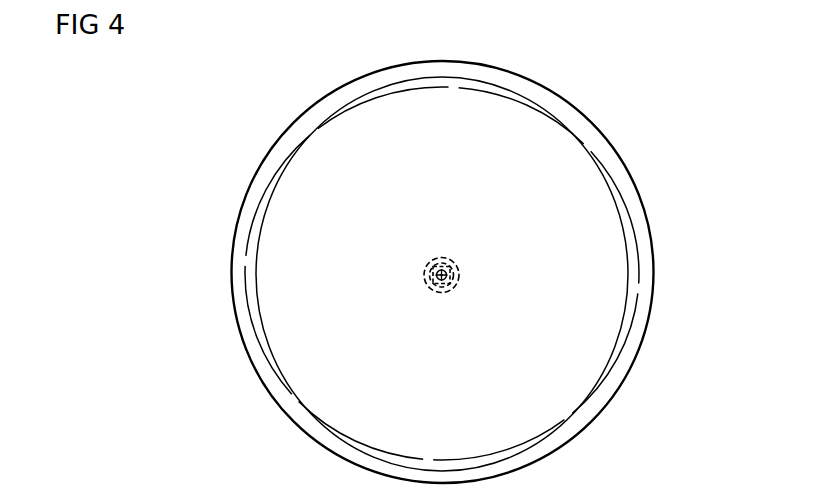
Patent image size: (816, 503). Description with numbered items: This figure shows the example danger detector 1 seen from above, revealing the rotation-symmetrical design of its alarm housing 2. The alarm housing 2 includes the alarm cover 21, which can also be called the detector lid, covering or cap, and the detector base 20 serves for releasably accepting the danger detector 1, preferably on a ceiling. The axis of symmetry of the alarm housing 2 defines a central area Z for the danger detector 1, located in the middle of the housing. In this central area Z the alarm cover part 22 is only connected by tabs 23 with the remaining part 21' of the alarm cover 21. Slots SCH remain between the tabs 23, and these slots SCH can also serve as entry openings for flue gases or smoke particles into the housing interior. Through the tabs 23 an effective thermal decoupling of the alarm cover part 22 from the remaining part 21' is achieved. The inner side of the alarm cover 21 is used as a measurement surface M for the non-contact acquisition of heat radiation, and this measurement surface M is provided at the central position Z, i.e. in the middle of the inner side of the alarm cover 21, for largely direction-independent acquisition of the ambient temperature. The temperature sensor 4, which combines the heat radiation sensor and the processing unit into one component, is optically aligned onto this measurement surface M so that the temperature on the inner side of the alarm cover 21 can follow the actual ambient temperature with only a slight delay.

The danger detector 1 is at (616, 103).
The alarm housing 2 is at (485, 274).
The detector base 20 is at (657, 283).
The alarm cover 21 is at (477, 273).
The remaining part of the alarm cover 21' is at (512, 273).
The alarm cover part 22 is at (426, 276).
The tabs 23 is at (432, 265).
The temperature sensor 4 is at (455, 284).
The central area Z is at (454, 269).
The measurement surface M is at (432, 291).
The slots SCH is at (446, 258).